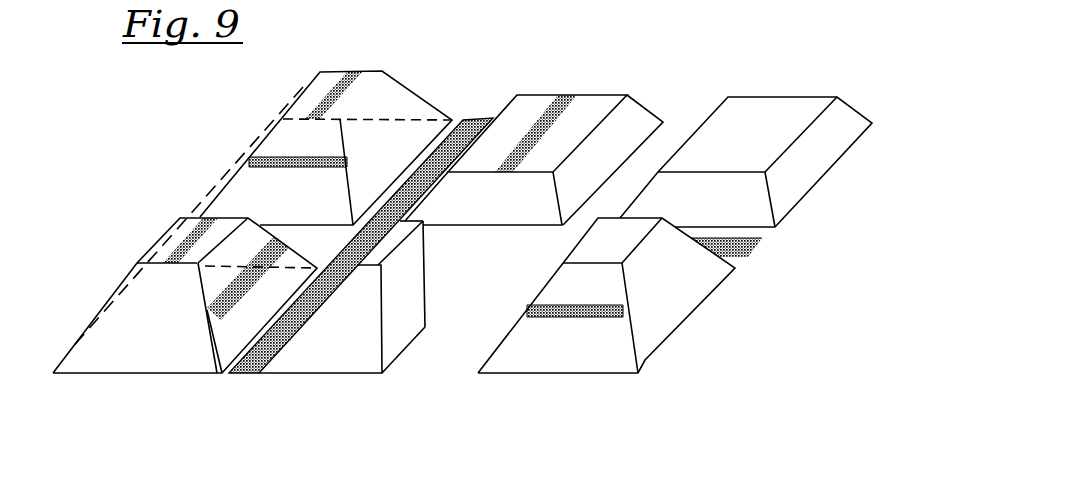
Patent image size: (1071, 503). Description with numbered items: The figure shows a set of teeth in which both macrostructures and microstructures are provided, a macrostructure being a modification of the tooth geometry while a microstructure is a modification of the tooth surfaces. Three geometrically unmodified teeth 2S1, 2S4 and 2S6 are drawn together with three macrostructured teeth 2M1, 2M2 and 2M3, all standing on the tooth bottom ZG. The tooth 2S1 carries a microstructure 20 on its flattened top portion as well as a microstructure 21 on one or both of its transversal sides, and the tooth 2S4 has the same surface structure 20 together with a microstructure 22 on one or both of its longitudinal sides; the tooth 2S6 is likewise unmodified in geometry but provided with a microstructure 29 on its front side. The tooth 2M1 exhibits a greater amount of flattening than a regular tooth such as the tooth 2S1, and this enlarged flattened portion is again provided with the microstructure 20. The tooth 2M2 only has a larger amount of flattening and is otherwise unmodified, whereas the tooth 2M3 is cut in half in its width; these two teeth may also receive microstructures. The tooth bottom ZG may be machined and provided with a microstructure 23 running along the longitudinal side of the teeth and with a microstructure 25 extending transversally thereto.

The microstructure 20 is at (342, 75).
The microstructure 21 is at (250, 157).
The microstructure 22 is at (220, 373).
The microstructure 23 is at (468, 118).
The microstructure 25 is at (747, 257).
The stripe on front face of block 2S6 29 is at (577, 317).
The tooth 2S1 is at (402, 100).
The tooth 2S4 is at (140, 373).
The tooth 2S6 is at (648, 358).
The tooth 2M1 is at (545, 97).
The tooth 2M2 is at (756, 97).
The tooth 2M3 is at (330, 373).
The tooth bottom ZG is at (447, 337).